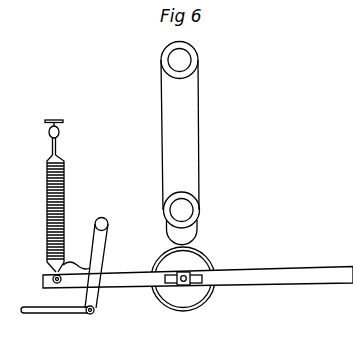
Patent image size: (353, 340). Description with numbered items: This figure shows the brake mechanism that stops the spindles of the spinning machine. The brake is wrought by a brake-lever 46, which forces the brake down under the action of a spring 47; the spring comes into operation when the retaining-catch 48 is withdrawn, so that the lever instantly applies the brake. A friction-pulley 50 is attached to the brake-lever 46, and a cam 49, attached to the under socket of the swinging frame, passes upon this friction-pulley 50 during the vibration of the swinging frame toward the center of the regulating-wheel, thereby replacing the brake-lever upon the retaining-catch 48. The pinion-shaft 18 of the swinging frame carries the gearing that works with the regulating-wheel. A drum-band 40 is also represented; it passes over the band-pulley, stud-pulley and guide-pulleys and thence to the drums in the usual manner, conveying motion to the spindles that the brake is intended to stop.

The pinion-shaft 18 is at (180, 135).
The cam 49 is at (182, 234).
The friction-pulley 50 is at (183, 279).
The brake-lever 46 is at (198, 275).
The spring 47 is at (64, 201).
The retaining-catch 48 is at (85, 263).
The drum-band 40 is at (57, 317).